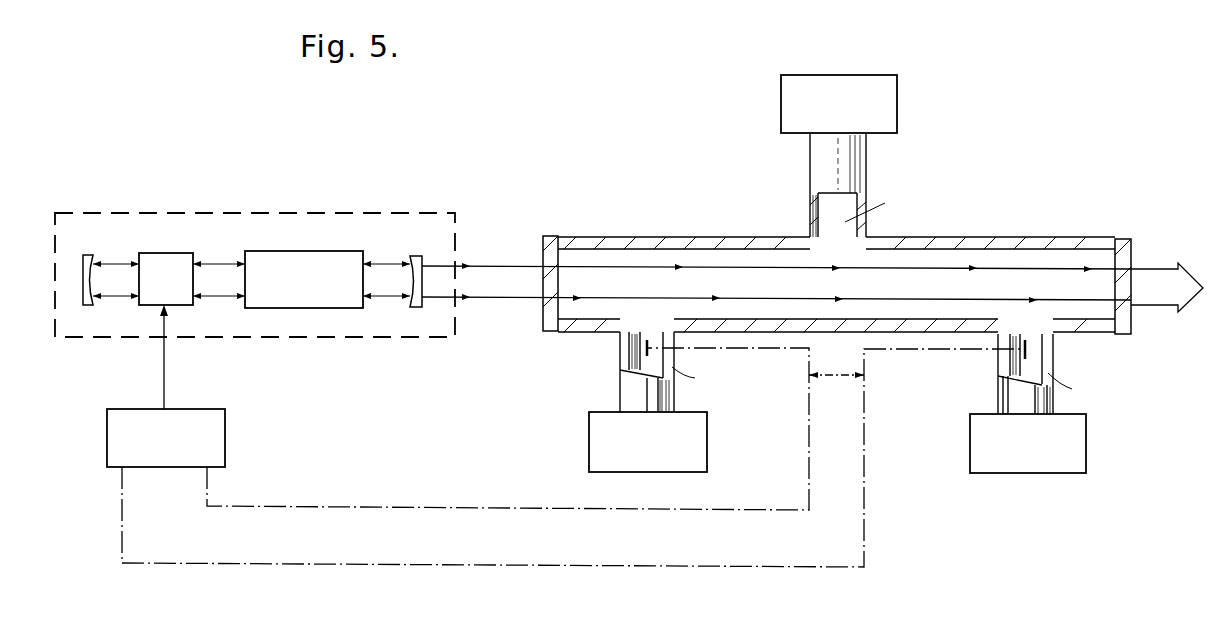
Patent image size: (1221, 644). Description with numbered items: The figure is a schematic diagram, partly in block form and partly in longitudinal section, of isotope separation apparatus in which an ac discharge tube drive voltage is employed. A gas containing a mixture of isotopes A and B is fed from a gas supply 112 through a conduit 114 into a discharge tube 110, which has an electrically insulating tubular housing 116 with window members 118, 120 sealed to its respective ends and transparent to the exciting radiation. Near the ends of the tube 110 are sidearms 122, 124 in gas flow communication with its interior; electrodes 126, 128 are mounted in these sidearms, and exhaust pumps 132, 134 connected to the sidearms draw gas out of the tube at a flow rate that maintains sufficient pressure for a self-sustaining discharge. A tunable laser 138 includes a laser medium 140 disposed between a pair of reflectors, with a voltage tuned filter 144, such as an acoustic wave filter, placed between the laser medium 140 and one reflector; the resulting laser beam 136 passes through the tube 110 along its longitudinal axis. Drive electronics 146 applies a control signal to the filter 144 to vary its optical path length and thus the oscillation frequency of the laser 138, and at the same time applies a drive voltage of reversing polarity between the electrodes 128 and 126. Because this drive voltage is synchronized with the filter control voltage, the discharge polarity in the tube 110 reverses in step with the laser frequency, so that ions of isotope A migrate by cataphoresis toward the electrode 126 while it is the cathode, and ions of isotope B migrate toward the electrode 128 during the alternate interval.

The discharge tube 110 is at (847, 272).
The gas supply 112 is at (890, 86).
The conduit 114 is at (810, 150).
The tubular housing 116 is at (626, 240).
The window member 118 is at (1131, 250).
The window member 120 is at (543, 320).
The sidearm 122 is at (1050, 363).
The sidearm 124 is at (622, 340).
The electrode 126 is at (1013, 357).
The electrode 128 is at (641, 352).
The exhaust pump 132 is at (1085, 474).
The exhaust pump 134 is at (597, 467).
The laser beam 136 is at (497, 296).
The tunable laser 138 is at (378, 212).
The laser medium 140 is at (298, 300).
The voltage tuned filter 144 is at (181, 255).
The drive electronics 146 is at (218, 413).